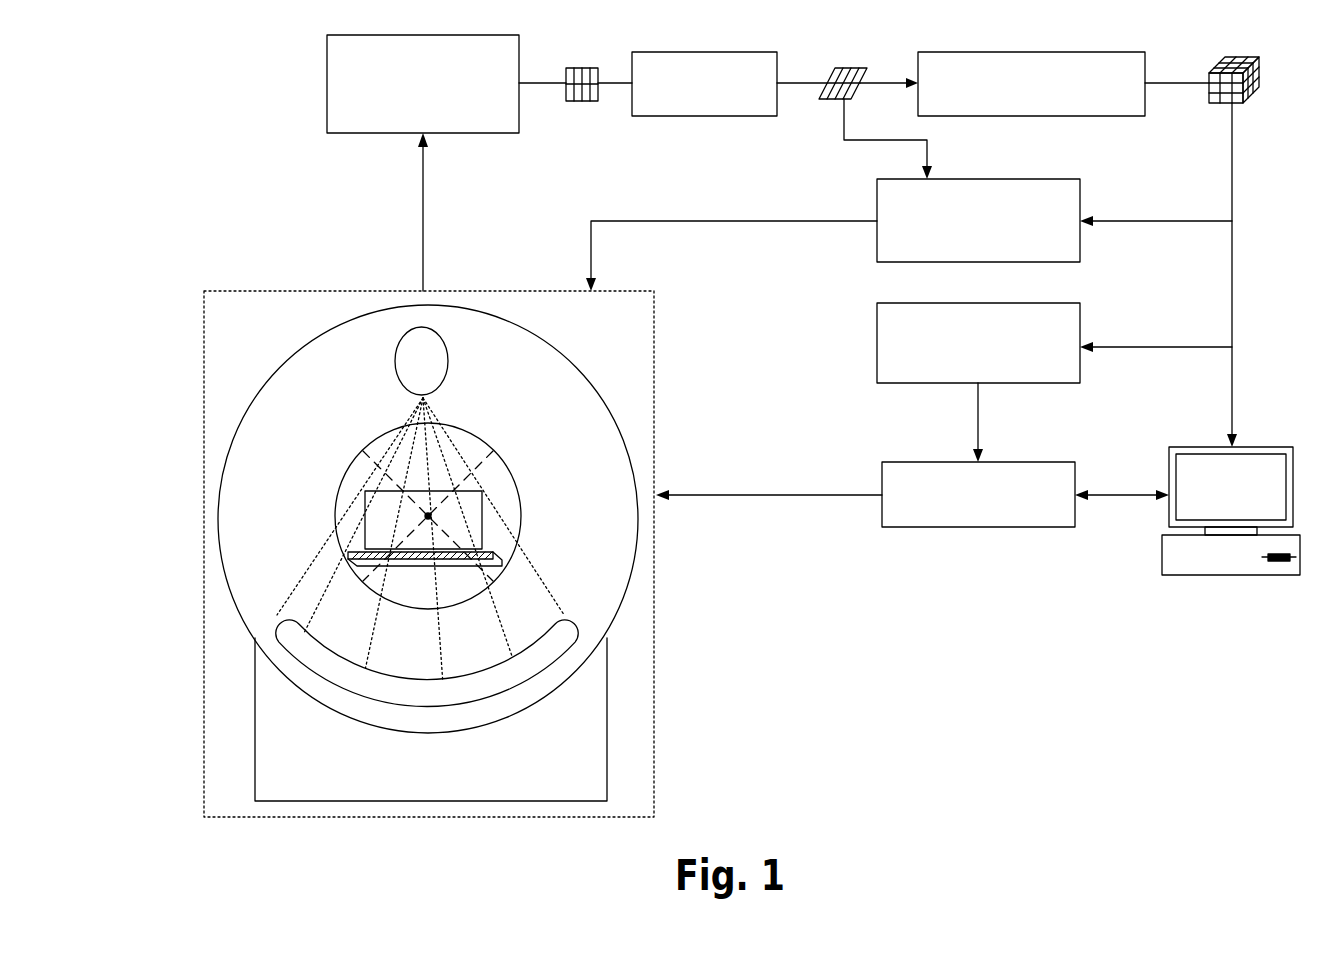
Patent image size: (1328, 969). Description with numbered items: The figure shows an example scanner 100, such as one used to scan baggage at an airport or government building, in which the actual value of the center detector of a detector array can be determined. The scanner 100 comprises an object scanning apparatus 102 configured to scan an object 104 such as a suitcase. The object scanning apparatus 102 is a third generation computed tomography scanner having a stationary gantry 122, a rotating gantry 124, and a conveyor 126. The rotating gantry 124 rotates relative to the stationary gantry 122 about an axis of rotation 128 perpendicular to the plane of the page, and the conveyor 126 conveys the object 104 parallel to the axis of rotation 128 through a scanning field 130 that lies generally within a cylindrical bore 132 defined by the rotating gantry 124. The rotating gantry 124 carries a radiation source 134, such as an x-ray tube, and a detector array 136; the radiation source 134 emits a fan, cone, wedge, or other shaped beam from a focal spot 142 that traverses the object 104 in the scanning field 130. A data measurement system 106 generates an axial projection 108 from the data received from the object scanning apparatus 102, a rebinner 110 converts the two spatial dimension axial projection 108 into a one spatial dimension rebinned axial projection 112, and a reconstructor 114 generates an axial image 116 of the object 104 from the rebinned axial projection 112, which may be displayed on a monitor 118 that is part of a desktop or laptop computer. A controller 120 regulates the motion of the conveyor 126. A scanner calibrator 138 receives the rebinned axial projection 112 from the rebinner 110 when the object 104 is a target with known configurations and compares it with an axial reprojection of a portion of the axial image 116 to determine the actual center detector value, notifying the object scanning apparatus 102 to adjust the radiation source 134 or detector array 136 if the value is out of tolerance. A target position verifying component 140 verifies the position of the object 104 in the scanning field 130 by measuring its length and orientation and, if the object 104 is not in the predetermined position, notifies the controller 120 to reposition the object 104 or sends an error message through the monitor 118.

The scanner 100 is at (192, 70).
The object scanning apparatus 102 is at (204, 291).
The object 104 is at (365, 500).
The data measurement system 106 is at (327, 36).
The axial projection 108 is at (567, 68).
The rebinner 110 is at (632, 52).
The rebinned axial projection 112 is at (835, 68).
The reconstructor 114 is at (918, 52).
The axial image 116 is at (1225, 57).
The monitor 118 is at (1169, 447).
The controller 120 is at (882, 462).
The stationary gantry 122 is at (255, 716).
The rotating gantry 124 is at (220, 486).
The conveyor 126 is at (527, 547).
The axis of rotation 128 is at (428, 516).
The scanning field 130 is at (542, 509).
The cylindrical bore 132 is at (522, 494).
The radiation source 134 is at (446, 346).
The detector array 136 is at (290, 655).
The scanner calibrator 138 is at (1080, 179).
The target position verifying component 140 is at (1080, 303).
The focal spot 142 is at (418, 399).